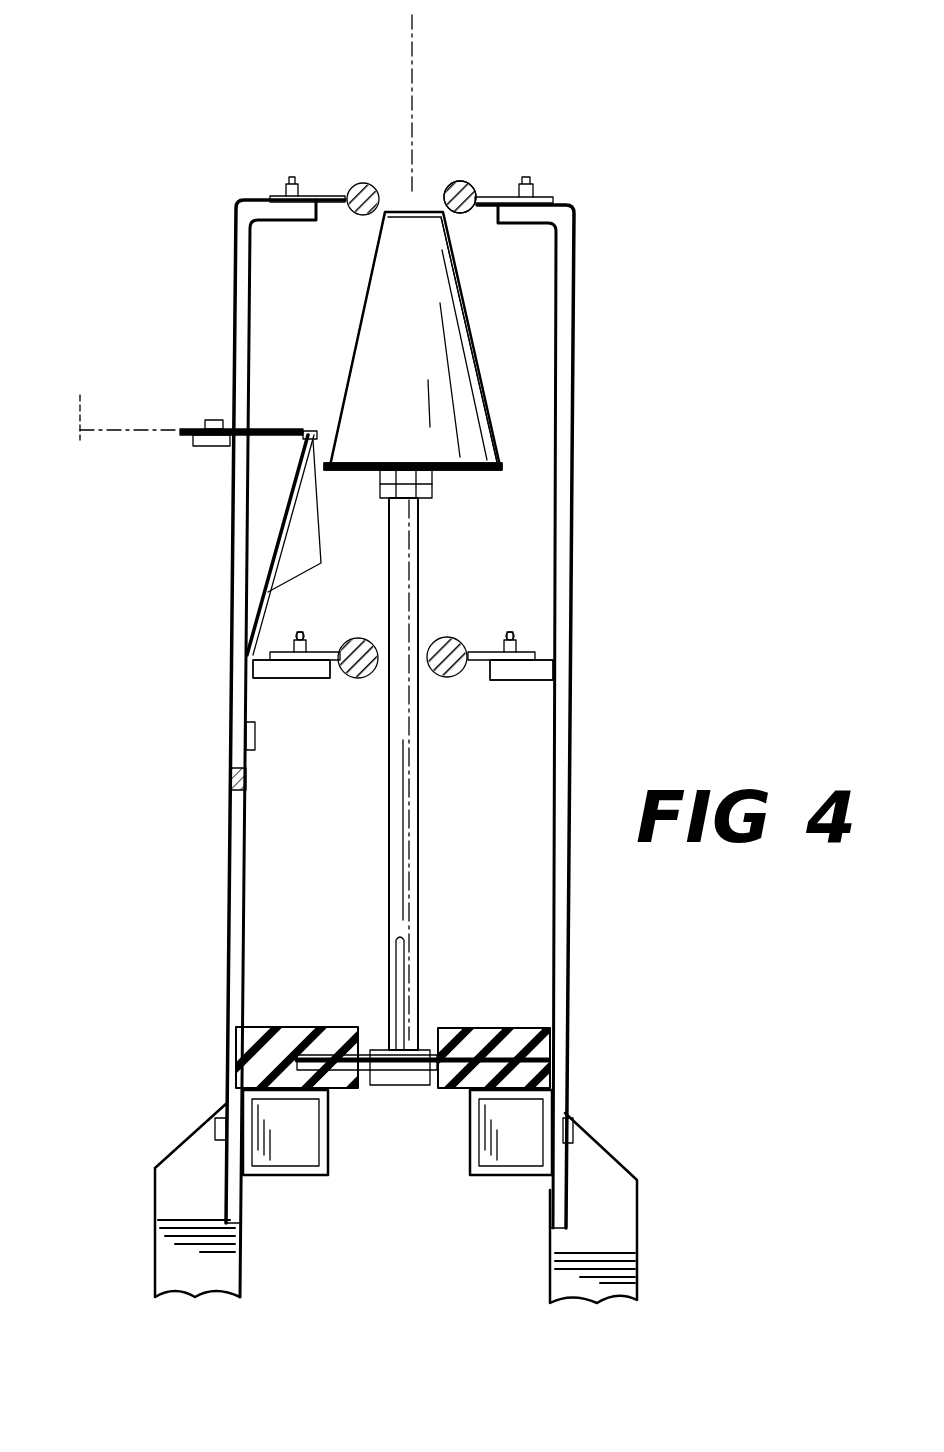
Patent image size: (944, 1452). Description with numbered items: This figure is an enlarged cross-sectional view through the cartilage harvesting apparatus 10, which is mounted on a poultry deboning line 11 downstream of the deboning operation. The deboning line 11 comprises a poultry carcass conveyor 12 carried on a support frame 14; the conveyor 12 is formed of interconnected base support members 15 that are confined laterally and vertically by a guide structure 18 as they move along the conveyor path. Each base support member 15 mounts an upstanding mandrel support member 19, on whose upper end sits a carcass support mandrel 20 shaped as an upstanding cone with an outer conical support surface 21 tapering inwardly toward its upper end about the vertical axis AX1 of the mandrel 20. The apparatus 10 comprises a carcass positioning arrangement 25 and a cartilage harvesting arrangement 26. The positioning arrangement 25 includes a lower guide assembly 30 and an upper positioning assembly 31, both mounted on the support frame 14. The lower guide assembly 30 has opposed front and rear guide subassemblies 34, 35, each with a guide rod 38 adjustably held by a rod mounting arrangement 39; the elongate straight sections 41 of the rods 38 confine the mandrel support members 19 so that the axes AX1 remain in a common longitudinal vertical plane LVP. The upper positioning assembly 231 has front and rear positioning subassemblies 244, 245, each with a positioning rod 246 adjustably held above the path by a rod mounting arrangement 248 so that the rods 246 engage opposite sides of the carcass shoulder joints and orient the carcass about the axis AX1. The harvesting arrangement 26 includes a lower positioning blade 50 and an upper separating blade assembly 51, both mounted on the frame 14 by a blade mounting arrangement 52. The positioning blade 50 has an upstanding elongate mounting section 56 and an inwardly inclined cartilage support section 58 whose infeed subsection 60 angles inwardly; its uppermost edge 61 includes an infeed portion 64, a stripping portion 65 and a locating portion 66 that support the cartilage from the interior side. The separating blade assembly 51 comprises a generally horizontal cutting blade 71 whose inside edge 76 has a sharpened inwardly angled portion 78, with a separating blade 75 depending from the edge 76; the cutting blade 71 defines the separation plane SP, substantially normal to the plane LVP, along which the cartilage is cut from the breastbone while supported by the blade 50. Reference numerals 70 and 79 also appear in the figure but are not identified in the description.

The cartilage harvesting apparatus 10 is at (451, 748).
The poultry deboning line 11 is at (428, 1135).
The poultry carcass conveyor 12 is at (494, 1205).
The support frame 14 is at (262, 1180).
The base support members 15 is at (372, 1085).
The guide structure 18 is at (268, 1030).
The mandrel support member 19 is at (418, 932).
The carcass support mandrel 20 is at (468, 364).
The outer conical support surface 21 is at (376, 308).
The carcass positioning arrangement 25 is at (551, 210).
The cartilage harvesting arrangement 26 is at (175, 442).
The lower guide assembly 30 is at (443, 668).
The upper positioning assembly 31 is at (263, 205).
The front guide subassembly 34 is at (330, 668).
The rear guide subassembly 35 is at (480, 668).
The guide rod 38 is at (360, 632).
The rod mounting arrangement 39 is at (280, 672).
The elongate straight section 41 is at (324, 650).
The lower positioning blade 50 is at (209, 513).
The upper separating blade assembly 51 is at (192, 428).
The blade mounting arrangement 52 is at (193, 446).
The upstanding elongate mounting section 56 is at (246, 730).
The inwardly inclined cartilage support section 58 is at (262, 628).
The infeed subsection 60 is at (315, 563).
The uppermost edge 61 is at (318, 492).
The infeed portion 64 is at (313, 543).
The stripping portion 65 is at (338, 469).
The locating portion 66 is at (346, 443).
The lever pivot 70 is at (285, 534).
The cutting blade 71 is at (208, 420).
The separating blade 75 is at (297, 457).
The inside edge 76 is at (302, 430).
The inwardly angled portion 78 is at (265, 463).
The pivot link 79 is at (258, 428).
The upper positioning assembly 231 is at (458, 160).
The front positioning subassembly 244 is at (355, 212).
The rear positioning subassembly 245 is at (467, 215).
The positioning rod 246 is at (357, 185).
The rod mounting arrangement 248 is at (235, 258).
The longitudinal vertical plane LVP is at (412, 45).
The separation plane SP is at (59, 408).
The vertical axis AX1 is at (404, 828).